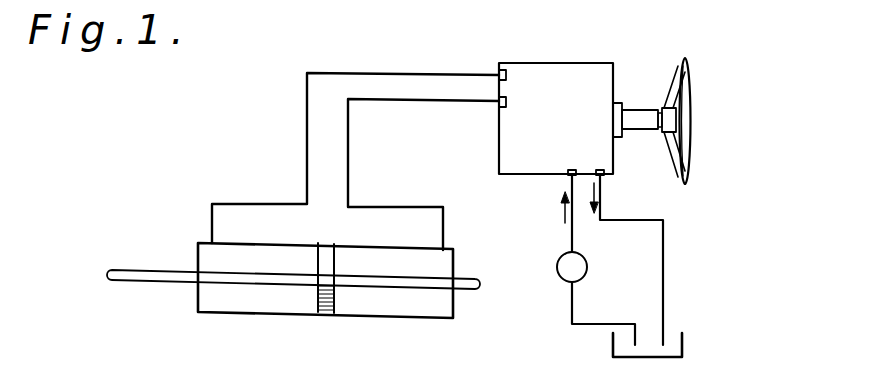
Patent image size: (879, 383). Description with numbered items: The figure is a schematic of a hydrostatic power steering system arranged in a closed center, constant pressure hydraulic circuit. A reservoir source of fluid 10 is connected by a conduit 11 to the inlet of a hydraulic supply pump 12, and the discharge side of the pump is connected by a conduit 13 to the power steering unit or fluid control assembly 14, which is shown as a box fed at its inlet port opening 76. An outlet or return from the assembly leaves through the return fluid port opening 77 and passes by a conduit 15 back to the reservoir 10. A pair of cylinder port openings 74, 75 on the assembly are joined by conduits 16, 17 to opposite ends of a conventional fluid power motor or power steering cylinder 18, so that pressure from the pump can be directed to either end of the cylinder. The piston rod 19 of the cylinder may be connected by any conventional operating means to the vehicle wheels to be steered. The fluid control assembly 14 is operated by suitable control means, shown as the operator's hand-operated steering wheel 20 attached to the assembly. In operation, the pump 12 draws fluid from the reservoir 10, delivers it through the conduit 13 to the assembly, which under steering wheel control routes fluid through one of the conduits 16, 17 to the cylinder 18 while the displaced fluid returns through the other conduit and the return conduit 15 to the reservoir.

The reservoir source of fluid 10 is at (684, 345).
The conduit 11 is at (626, 296).
The hydraulic supply pump 12 is at (588, 267).
The conduit 13 is at (571, 238).
The fluid control assembly 14 is at (594, 55).
The conduit 15 is at (664, 253).
The conduit 16 is at (412, 72).
The conduit 17 is at (446, 102).
The power steering cylinder 18 is at (416, 320).
The piston rod 19 is at (296, 285).
The steering wheel 20 is at (689, 97).
The cylinder port opening 74 is at (506, 75).
The cylinder port opening 75 is at (507, 102).
The inlet port opening 76 is at (571, 168).
The return fluid port opening 77 is at (600, 169).